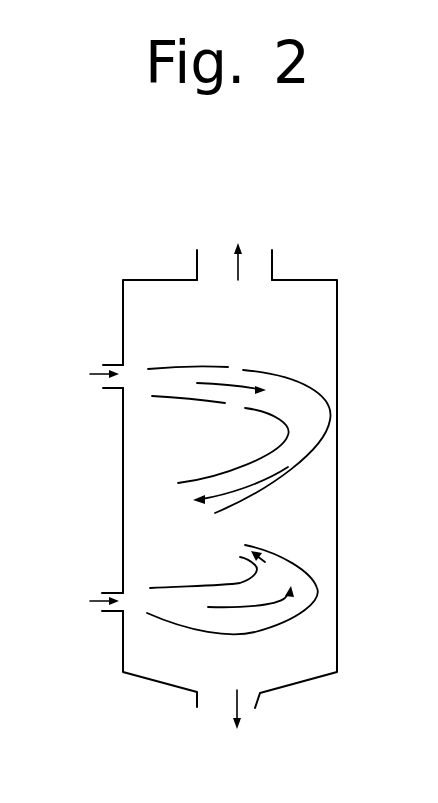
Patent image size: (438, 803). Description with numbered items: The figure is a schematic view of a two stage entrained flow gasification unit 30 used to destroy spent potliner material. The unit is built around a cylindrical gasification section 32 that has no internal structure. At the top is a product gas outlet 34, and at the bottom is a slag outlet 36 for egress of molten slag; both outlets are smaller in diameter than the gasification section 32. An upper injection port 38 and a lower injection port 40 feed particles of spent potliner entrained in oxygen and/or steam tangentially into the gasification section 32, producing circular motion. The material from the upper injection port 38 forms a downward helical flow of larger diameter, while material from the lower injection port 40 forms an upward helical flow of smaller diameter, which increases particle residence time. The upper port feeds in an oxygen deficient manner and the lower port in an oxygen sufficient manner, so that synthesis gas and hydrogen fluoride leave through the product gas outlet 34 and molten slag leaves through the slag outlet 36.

The gasification unit 30 is at (337, 335).
The gasification section 32 is at (308, 492).
The product gas outlet 34 is at (257, 265).
The slag outlet 36 is at (258, 696).
The upper injection port 38 is at (117, 365).
The lower injection port 40 is at (112, 592).